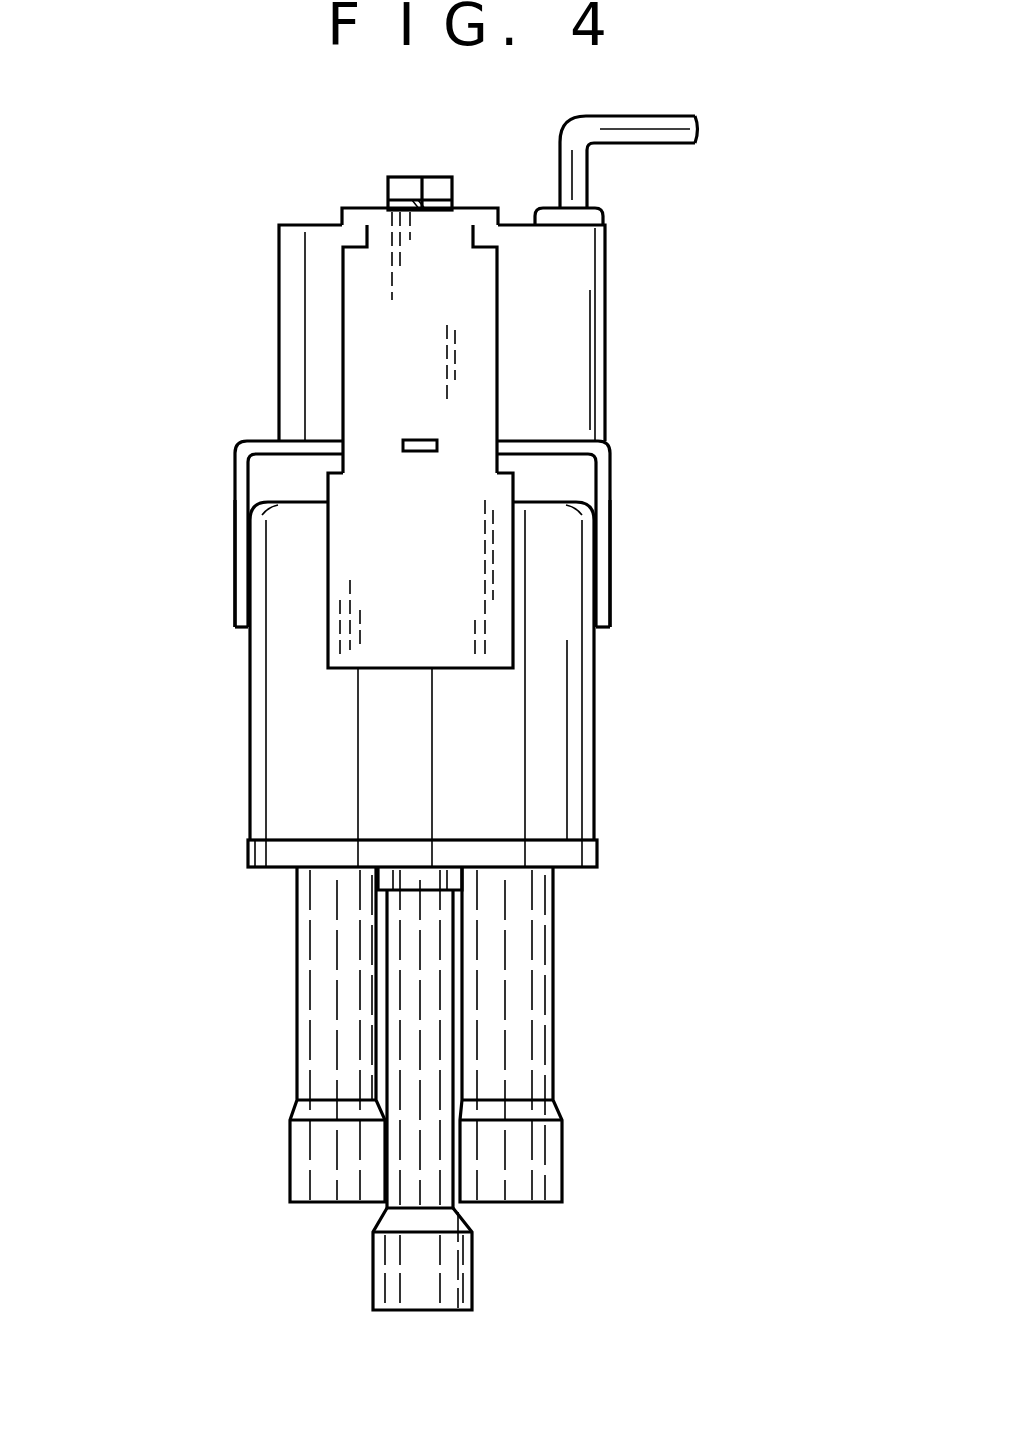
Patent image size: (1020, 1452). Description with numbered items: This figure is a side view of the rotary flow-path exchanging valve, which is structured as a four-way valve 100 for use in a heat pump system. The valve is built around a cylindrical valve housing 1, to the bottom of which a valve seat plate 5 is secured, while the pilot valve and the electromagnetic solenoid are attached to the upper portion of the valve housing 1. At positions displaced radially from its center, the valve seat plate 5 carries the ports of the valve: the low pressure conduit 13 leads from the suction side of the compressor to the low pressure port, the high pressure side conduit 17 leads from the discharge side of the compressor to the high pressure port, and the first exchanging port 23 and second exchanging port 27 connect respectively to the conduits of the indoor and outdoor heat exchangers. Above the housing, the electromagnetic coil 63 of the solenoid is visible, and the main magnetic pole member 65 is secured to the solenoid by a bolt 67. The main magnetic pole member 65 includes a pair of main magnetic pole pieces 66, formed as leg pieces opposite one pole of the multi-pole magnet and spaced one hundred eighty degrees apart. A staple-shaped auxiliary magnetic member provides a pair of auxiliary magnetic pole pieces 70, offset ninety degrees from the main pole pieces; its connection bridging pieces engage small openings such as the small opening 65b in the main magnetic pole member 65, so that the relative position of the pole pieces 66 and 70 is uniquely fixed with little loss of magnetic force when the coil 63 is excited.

The four-way valve 100 is at (620, 582).
The valve housing 1 is at (577, 747).
The valve seat plate 5 is at (583, 852).
The low pressure conduit 13 is at (473, 1275).
The high pressure side conduit 17 is at (440, 1055).
The first exchanging port 23 is at (310, 995).
The second exchanging port 27 is at (533, 960).
The electromagnetic coil 63 is at (567, 352).
The main magnetic pole member 65 is at (343, 345).
The small opening 65b is at (420, 452).
The main magnetic pole pieces 66 is at (492, 628).
The bolt 67 is at (422, 177).
The auxiliary magnetic pole pieces 70 is at (610, 495).